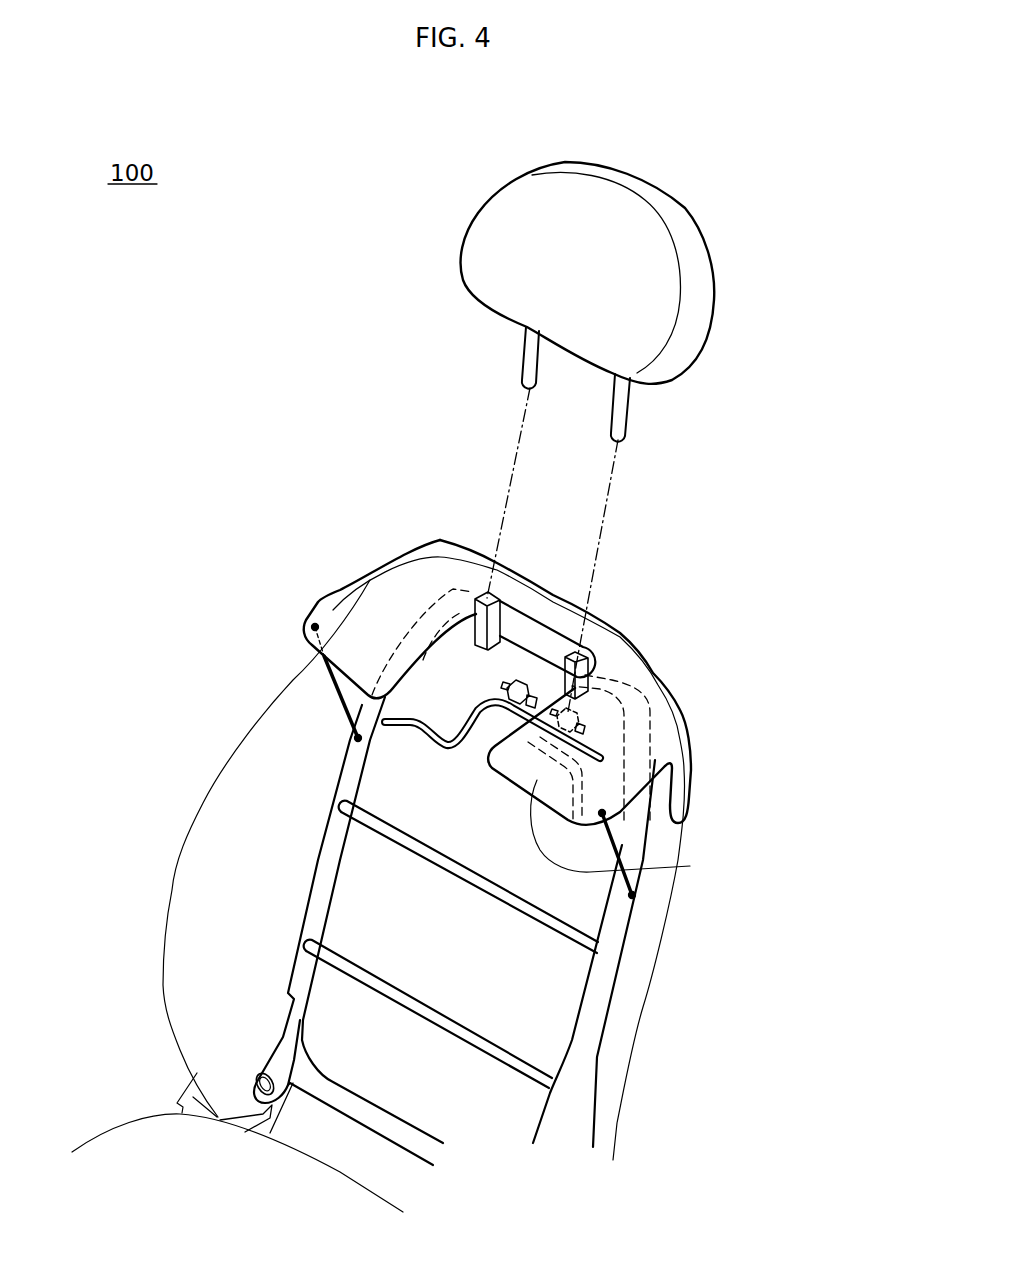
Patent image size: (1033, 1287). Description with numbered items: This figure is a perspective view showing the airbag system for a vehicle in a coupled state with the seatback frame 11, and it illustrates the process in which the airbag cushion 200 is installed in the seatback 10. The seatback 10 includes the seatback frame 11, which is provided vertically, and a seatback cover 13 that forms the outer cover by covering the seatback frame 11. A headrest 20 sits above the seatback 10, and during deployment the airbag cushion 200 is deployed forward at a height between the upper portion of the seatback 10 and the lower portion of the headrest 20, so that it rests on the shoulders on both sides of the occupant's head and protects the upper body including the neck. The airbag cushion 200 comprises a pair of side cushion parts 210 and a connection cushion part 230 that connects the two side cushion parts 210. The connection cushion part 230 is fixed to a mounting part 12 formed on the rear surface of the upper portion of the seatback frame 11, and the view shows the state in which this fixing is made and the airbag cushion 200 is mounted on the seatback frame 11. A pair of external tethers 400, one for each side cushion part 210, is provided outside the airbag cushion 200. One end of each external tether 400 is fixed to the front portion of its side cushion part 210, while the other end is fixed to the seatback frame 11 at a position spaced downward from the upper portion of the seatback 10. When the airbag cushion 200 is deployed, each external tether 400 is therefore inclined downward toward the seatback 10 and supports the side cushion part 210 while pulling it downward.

The seatback 10 is at (728, 1062).
The seatback frame 11 is at (597, 987).
The mounting part 12 is at (515, 700).
The seatback cover 13 is at (175, 860).
The headrest 20 is at (690, 250).
The airbag cushion 200 is at (390, 433).
The side cushion parts 210 is at (348, 587).
The connection cushion part 230 is at (563, 615).
The external tether 400 is at (337, 688).